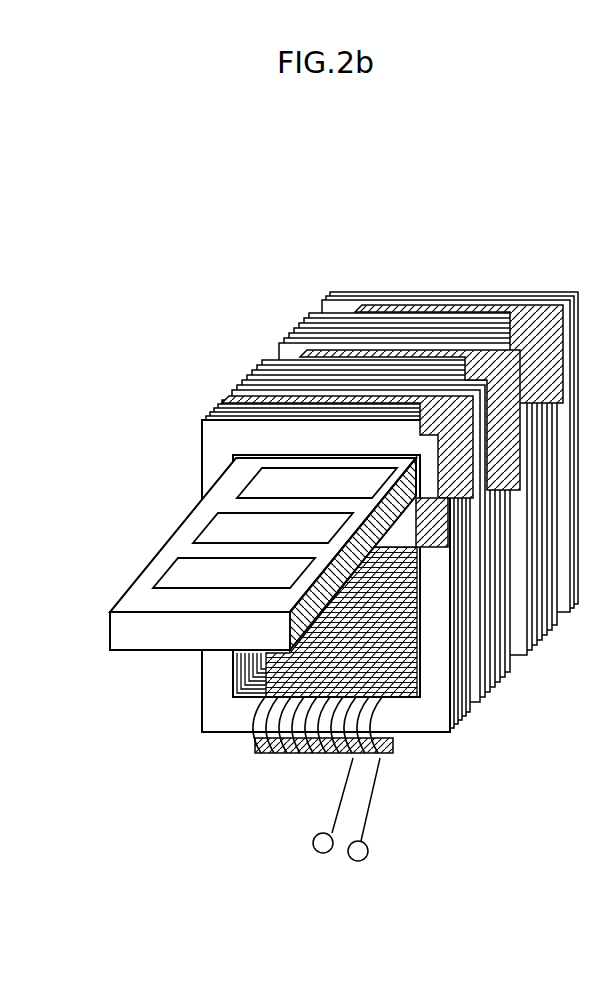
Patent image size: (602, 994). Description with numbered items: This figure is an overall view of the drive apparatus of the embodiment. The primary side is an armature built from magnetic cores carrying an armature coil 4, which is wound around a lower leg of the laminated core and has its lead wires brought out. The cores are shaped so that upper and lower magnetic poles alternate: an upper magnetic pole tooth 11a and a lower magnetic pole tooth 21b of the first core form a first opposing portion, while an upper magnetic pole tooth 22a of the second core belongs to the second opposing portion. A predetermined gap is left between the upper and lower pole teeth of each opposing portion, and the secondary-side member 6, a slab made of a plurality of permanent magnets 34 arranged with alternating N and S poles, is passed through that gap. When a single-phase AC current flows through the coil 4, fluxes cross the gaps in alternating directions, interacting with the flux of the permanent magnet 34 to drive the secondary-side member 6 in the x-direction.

The upper magnetic pole tooth 11a is at (242, 437).
The upper magnetic pole tooth 22a is at (447, 413).
The lower magnetic pole tooth 21b is at (433, 547).
The secondary-side member 6 is at (173, 540).
The permanent magnet 34 is at (187, 578).
The armature coil 4 is at (252, 738).